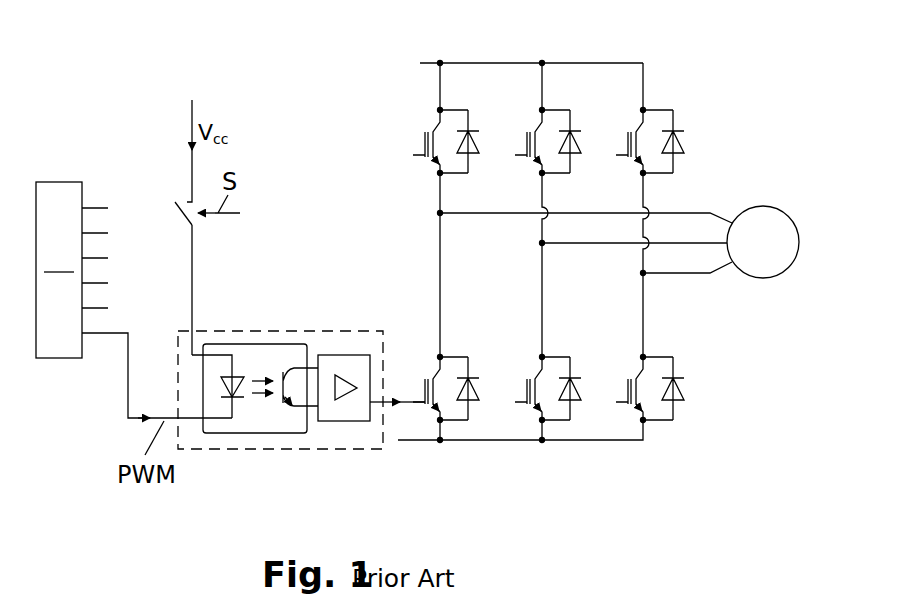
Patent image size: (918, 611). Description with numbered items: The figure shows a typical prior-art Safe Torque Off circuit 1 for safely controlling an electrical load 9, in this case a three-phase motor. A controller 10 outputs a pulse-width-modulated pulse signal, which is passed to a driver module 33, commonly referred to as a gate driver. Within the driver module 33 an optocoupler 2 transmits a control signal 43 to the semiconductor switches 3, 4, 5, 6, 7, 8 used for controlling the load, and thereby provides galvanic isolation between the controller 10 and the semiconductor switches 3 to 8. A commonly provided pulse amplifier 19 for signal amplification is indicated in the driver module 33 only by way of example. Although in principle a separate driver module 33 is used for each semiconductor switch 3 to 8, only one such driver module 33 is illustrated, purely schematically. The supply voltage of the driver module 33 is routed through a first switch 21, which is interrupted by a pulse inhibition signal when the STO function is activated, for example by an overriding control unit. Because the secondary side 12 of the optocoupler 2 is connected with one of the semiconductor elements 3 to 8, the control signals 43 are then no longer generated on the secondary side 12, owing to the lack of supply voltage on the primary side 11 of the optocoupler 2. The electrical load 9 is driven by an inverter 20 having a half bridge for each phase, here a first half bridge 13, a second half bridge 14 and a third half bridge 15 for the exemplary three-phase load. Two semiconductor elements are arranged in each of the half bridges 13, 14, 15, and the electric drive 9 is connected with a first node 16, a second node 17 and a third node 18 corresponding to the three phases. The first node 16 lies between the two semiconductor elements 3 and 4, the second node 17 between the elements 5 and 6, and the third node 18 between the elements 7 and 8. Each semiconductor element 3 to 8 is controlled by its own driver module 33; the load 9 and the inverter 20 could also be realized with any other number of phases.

The Safe Torque Off circuit 1 is at (305, 138).
The optocoupler 2 is at (255, 394).
The semiconductor switch 3 is at (436, 372).
The semiconductor switch 4 is at (430, 129).
The semiconductor switch 5 is at (538, 373).
The semiconductor switch 6 is at (533, 129).
The semiconductor switch 7 is at (640, 373).
The semiconductor switch 8 is at (635, 129).
The electrical load 9 is at (752, 207).
The controller 10 is at (72, 270).
The primary side 11 is at (227, 423).
The secondary side 12 is at (298, 428).
The first half bridge 13 is at (410, 72).
The second half bridge 14 is at (569, 55).
The third half bridge 15 is at (661, 75).
The first node 16 is at (441, 214).
The second node 17 is at (543, 244).
The third node 18 is at (644, 274).
The pulse amplifier 19 is at (335, 354).
The inverter 20 is at (598, 456).
The first switch 21 is at (172, 190).
The driver module 33 is at (313, 330).
The control signal 43 is at (401, 408).